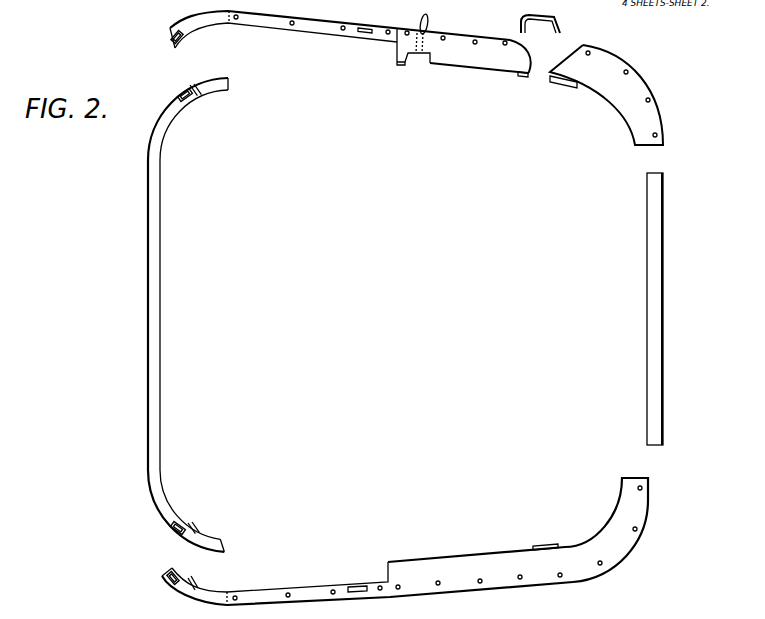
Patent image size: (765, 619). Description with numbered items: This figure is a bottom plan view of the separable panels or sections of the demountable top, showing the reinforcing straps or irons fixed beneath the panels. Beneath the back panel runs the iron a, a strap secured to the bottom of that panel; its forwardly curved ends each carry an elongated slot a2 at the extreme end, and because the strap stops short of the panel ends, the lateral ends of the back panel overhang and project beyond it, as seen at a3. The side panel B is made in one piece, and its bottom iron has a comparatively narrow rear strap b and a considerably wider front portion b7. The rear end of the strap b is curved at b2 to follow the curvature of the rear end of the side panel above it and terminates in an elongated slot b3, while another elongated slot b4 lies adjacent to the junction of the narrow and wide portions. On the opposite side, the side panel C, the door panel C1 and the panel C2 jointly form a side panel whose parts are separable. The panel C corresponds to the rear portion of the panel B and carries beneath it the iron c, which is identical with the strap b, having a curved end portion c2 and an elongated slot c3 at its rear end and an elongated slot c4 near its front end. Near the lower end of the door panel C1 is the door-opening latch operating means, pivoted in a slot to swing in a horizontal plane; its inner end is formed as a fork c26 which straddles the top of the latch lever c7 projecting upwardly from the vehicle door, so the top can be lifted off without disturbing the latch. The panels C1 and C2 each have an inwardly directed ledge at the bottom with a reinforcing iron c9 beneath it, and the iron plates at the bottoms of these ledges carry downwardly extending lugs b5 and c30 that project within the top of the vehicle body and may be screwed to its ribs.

The iron a is at (157, 335).
The elongated slot a2 is at (180, 523).
The overhanging end of back panel a3 is at (212, 82).
The rear portion of iron b is at (270, 590).
The curved rear end of strap b2 is at (193, 588).
The elongated slot b3 is at (168, 575).
The elongated slot b4 is at (358, 586).
The downwardly extending lug b5 is at (543, 543).
The front portion of iron b7 is at (482, 561).
The side panel B is at (418, 560).
The side panel C is at (268, 25).
The iron c is at (310, 30).
The curved end portion c2 is at (192, 18).
The elongated slot c3 is at (169, 35).
The elongated slot c4 is at (358, 36).
The door panel C1 is at (473, 78).
The latch lever c7 is at (462, 62).
The fork c26 is at (418, 63).
The panel C2 is at (627, 62).
The reinforcing iron c9 is at (648, 95).
The downwardly extending lug c30 is at (560, 84).